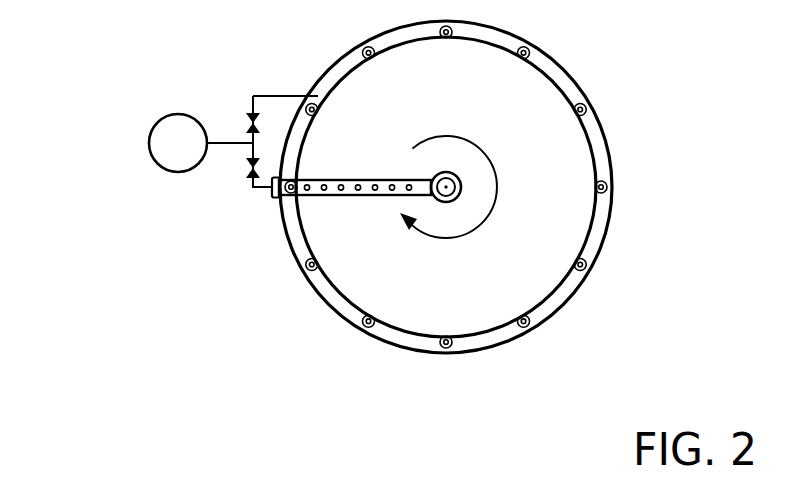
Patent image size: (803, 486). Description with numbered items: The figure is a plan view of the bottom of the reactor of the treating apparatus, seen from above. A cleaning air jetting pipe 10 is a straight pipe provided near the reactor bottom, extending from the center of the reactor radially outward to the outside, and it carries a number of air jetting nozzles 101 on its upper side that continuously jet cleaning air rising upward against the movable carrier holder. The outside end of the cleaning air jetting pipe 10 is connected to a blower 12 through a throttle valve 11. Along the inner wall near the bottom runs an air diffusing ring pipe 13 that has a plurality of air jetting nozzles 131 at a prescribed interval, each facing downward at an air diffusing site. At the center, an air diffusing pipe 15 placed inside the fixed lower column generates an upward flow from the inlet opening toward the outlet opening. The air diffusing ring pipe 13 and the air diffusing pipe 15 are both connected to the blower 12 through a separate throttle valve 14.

The cleaning air jetting pipe 10 is at (332, 196).
The air jetting nozzles 101 is at (378, 179).
The throttle valve 11 is at (246, 172).
The blower 12 is at (148, 145).
The air diffusing ring pipe 13 is at (498, 336).
The air jetting nozzles 131 is at (589, 110).
The throttle valve 14 is at (247, 117).
The air diffusing pipe 15 is at (459, 191).